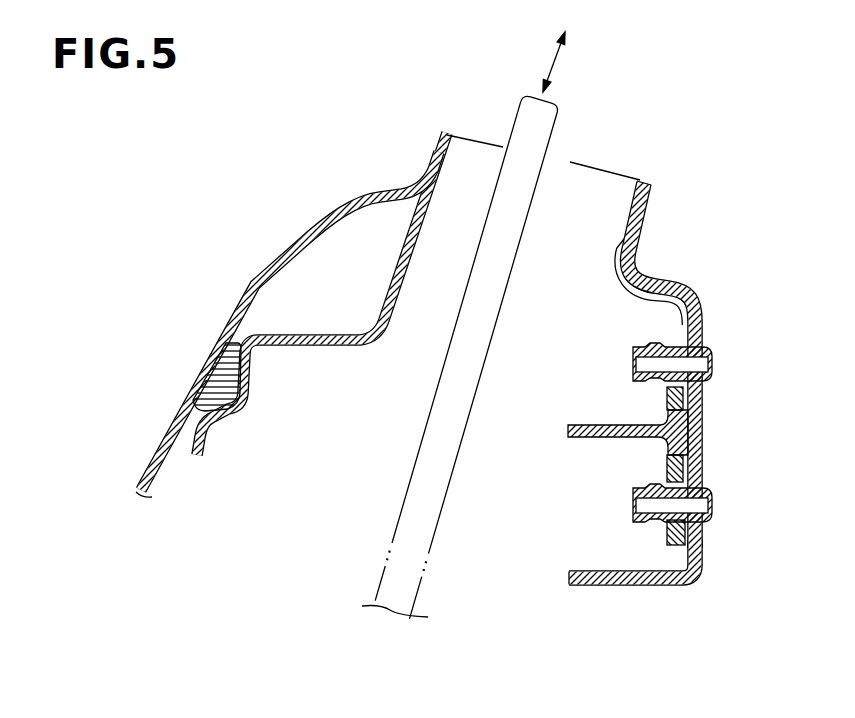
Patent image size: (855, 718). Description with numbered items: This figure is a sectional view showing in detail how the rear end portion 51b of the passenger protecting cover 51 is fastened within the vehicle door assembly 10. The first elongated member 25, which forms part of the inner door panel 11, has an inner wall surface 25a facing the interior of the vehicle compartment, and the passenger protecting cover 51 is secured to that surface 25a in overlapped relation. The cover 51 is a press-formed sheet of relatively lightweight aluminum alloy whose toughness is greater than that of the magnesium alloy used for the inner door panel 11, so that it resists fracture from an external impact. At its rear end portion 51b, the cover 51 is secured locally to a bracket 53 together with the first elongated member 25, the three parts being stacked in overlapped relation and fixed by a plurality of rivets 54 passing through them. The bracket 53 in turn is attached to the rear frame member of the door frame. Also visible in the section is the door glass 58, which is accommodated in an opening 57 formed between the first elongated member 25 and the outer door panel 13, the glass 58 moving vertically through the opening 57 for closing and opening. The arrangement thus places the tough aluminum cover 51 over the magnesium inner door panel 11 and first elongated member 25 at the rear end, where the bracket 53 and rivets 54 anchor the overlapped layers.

The seat belt device 10 is at (363, 138).
The outer door panel 13 is at (255, 283).
The door glass 58 is at (560, 122).
The opening 57 is at (592, 177).
The passenger protecting cover 51 is at (716, 364).
The rear end portion 51b is at (703, 312).
The rivets 54 is at (705, 361).
The inner wall surface 25a is at (703, 407).
The bracket 53 is at (667, 467).
The first elongated member 25 is at (652, 603).
The inner door panel 11 is at (650, 597).